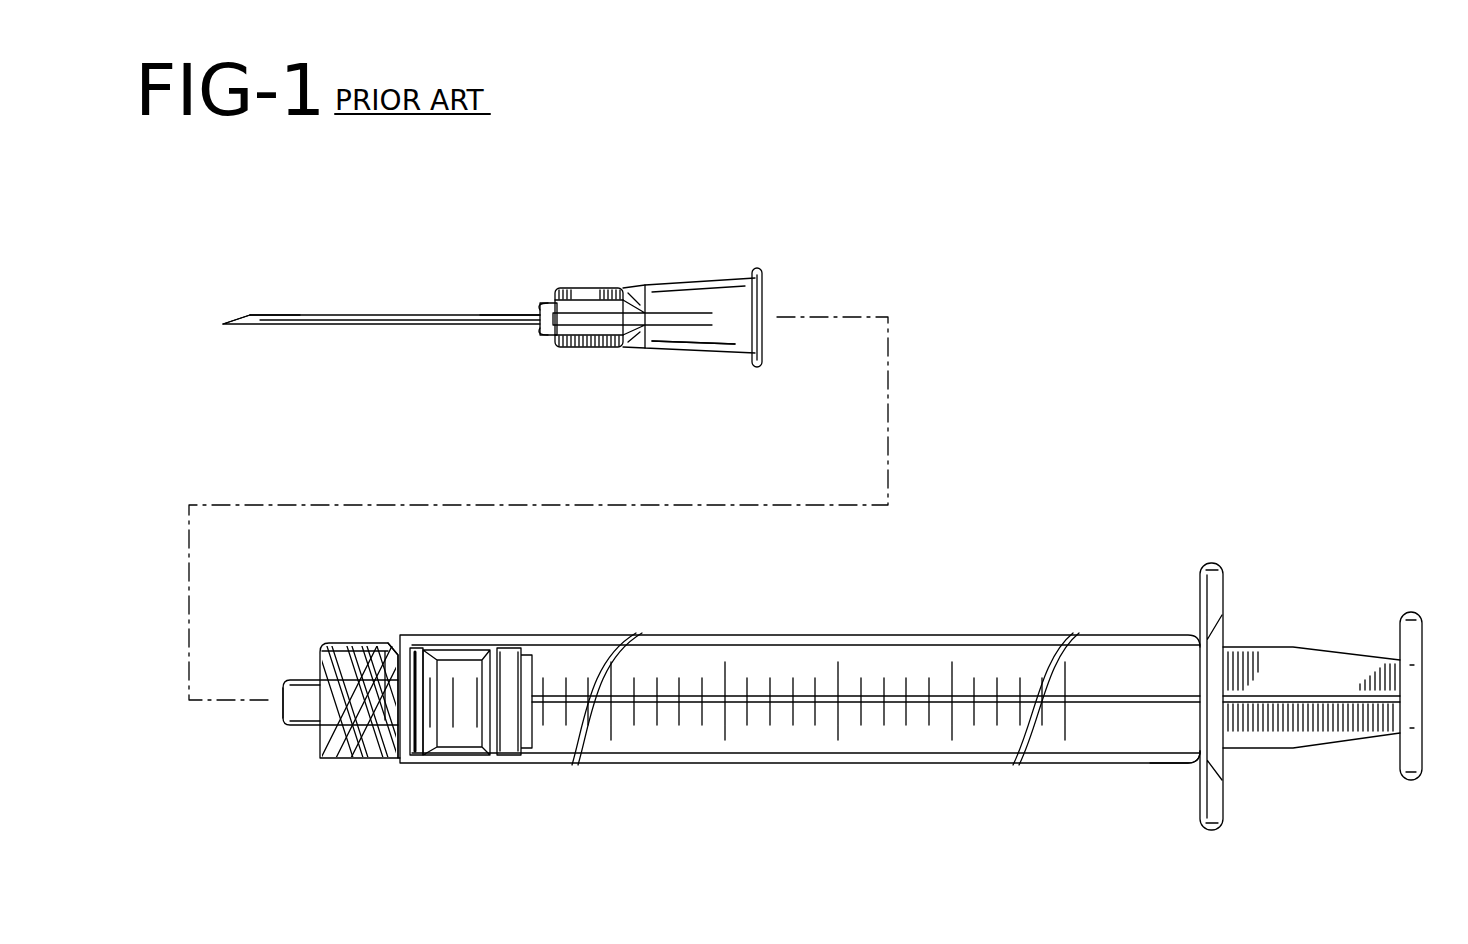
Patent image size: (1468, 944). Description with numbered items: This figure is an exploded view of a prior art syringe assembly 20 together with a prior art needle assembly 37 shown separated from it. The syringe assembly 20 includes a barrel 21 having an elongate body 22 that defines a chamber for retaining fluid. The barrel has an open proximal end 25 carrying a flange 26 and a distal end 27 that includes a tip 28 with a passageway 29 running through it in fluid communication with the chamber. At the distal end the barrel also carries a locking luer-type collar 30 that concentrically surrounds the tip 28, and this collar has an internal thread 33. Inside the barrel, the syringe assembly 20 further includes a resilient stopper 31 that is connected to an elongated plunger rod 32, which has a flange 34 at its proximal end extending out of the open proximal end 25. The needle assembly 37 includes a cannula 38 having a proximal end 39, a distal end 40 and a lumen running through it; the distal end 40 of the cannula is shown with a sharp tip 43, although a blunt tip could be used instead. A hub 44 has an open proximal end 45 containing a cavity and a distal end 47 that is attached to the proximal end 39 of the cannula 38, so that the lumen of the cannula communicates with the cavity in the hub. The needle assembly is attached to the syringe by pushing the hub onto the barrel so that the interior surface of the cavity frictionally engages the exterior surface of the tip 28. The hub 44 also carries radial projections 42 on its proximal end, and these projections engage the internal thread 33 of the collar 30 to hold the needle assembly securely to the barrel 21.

The syringe assembly 20 is at (912, 632).
The barrel 21 is at (984, 765).
The elongate body 22 is at (885, 765).
The open proximal end 25 is at (1170, 764).
The flange 26 is at (1224, 594).
The distal end 27 is at (427, 767).
The tip 28 is at (307, 680).
The passageway 29 is at (280, 710).
The locking luer-type collar 30 is at (358, 762).
The resilient stopper 31 is at (465, 736).
The plunger rod 32 is at (1282, 738).
The internal thread 33 is at (386, 641).
The flange 34 is at (1397, 768).
The needle assembly 37 is at (680, 280).
The cannula 38 is at (378, 326).
The proximal end 39 is at (500, 314).
The distal end 40 is at (270, 315).
The radial projections 42 is at (762, 272).
The sharp tip 43 is at (223, 325).
The hub 44 is at (658, 349).
The open proximal end 45 is at (735, 354).
The distal end 47 is at (560, 348).